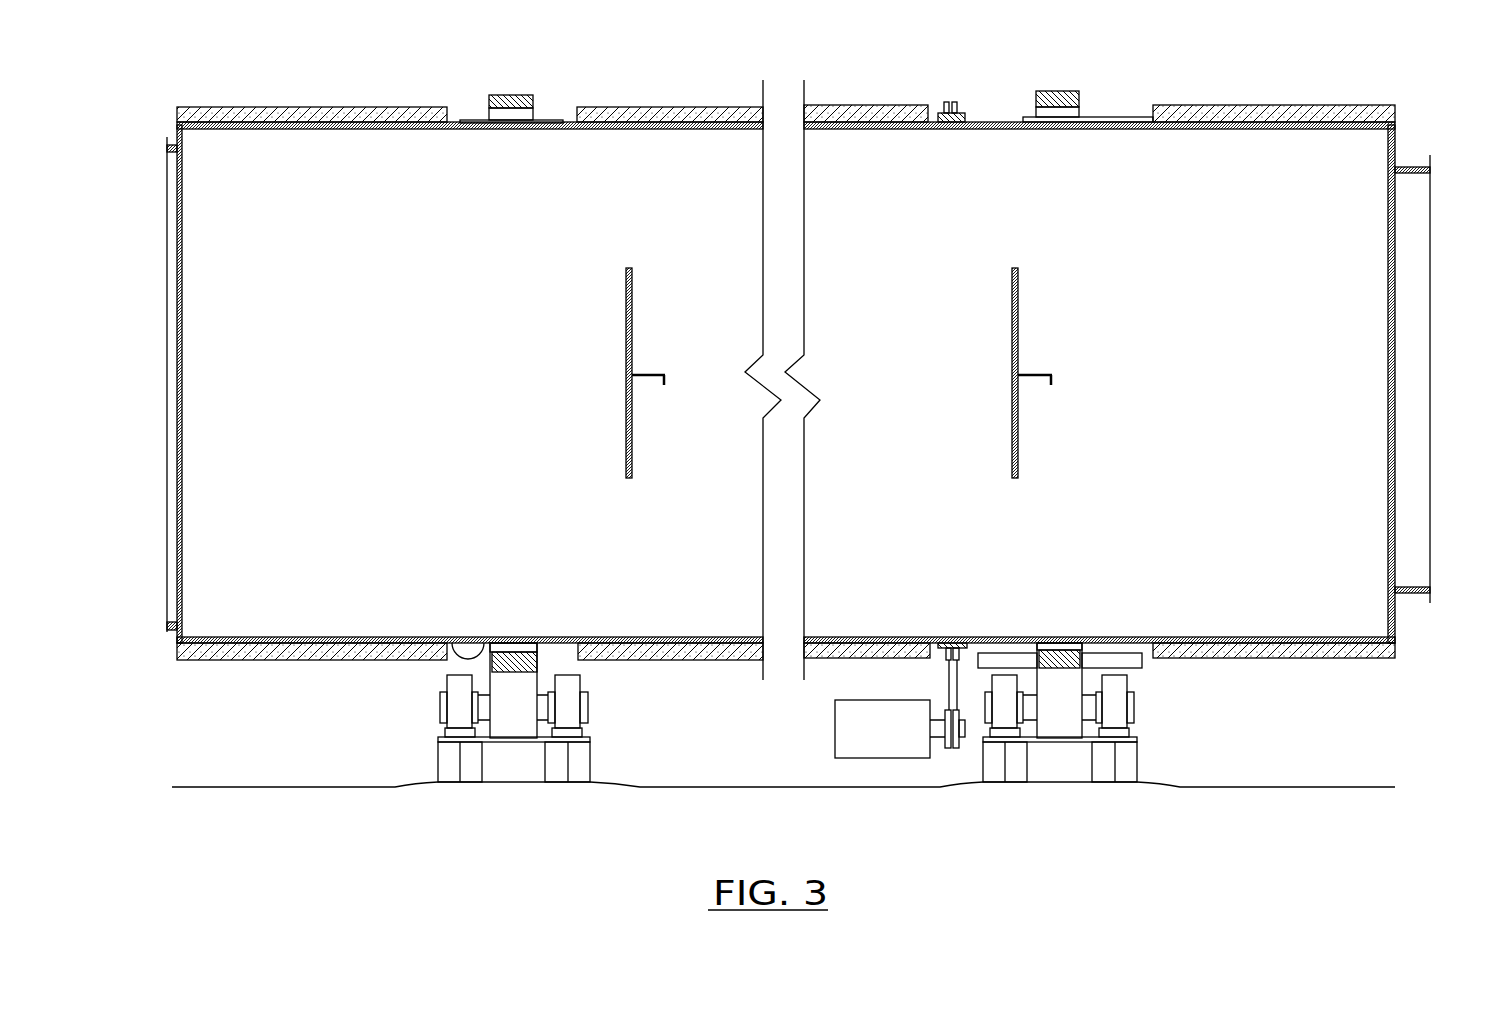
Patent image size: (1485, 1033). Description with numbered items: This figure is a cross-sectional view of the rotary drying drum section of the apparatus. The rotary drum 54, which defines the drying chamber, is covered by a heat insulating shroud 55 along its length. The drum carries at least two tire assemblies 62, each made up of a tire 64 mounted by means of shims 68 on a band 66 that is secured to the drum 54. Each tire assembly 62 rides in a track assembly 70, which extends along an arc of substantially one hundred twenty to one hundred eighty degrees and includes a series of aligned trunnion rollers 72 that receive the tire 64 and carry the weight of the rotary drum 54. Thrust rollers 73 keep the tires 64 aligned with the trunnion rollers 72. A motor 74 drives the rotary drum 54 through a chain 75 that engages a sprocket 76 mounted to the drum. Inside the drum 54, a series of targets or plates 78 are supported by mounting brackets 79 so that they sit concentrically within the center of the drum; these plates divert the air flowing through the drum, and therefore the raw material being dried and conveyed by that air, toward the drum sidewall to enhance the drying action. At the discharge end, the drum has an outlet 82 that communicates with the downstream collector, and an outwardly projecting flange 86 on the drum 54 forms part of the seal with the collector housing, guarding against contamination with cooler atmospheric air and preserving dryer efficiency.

The rotary drum 54 is at (658, 130).
The heat insulating shroud 55 is at (622, 107).
The tire assembly 62 is at (450, 585).
The tire 64 is at (510, 95).
The band 66 is at (1103, 118).
The shims 68 is at (527, 647).
The track assembly 70 is at (612, 718).
The trunnion rollers 72 is at (510, 717).
The thrust rollers 73 is at (1003, 653).
The motor 74 is at (835, 735).
The chain 75 is at (946, 680).
The sprocket 76 is at (953, 102).
The targets or plates 78 is at (625, 412).
The mounting brackets 79 is at (658, 373).
The outlet 82 is at (1410, 597).
The outwardly projecting flange 86 is at (1430, 598).